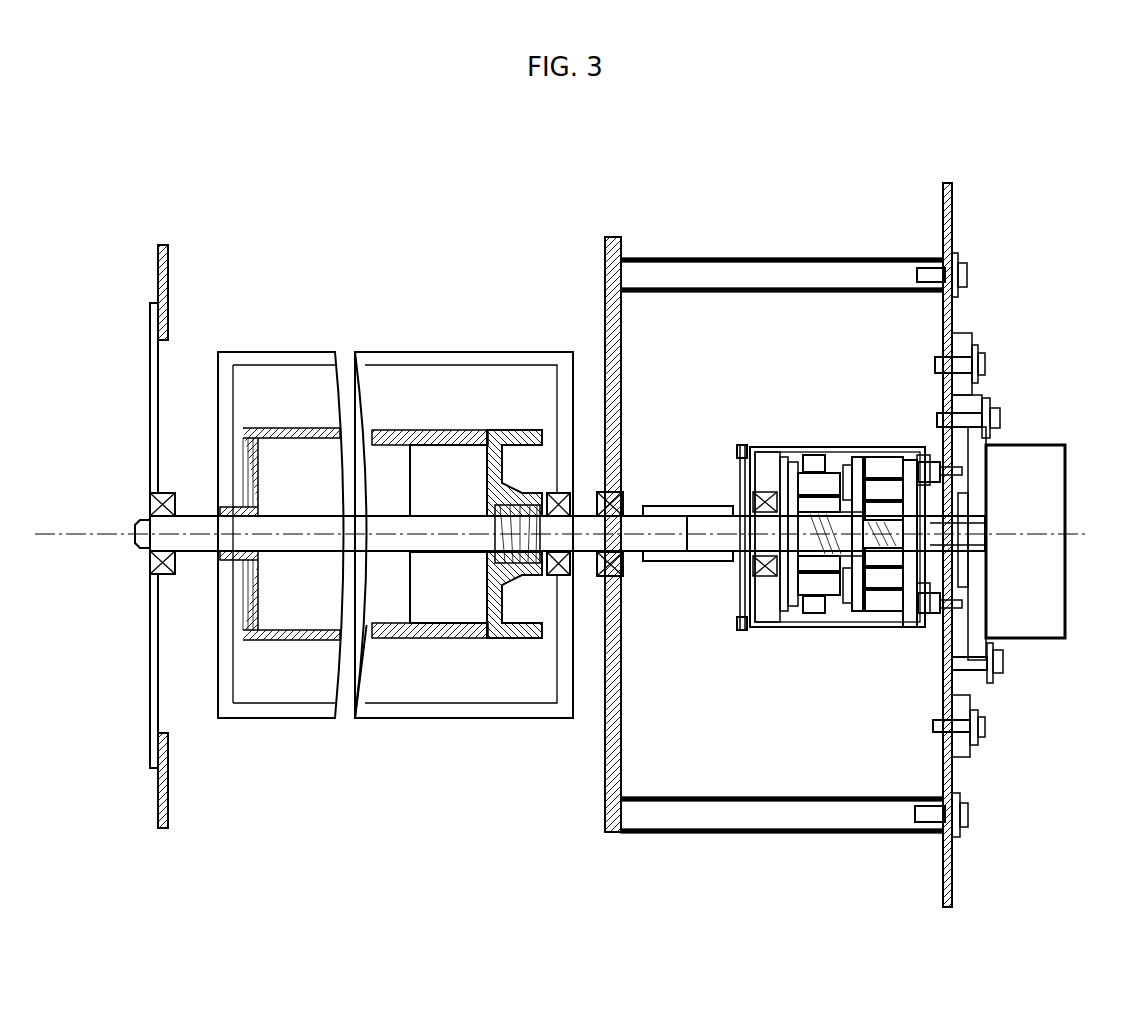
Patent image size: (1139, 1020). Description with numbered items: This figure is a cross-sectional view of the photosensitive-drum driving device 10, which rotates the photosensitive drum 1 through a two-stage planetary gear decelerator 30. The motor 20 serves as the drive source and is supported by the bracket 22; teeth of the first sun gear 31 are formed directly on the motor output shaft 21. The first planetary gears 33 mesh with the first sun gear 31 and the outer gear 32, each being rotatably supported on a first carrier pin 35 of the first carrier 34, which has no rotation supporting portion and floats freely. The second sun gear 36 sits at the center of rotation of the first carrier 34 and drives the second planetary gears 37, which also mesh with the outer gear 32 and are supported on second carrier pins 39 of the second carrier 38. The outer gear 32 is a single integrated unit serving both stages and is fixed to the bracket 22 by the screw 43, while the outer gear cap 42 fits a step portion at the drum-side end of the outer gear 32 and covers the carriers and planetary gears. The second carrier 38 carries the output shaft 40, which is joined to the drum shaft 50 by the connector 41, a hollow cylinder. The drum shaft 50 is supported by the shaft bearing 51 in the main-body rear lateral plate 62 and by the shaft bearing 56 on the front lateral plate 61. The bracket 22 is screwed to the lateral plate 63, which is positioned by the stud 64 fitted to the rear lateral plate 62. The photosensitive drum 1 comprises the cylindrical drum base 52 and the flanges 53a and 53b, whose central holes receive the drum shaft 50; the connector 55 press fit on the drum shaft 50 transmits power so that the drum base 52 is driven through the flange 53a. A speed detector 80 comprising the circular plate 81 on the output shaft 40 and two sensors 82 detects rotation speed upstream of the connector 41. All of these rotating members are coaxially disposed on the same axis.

The photosensitive drum 1 is at (380, 650).
The photosensitive-drum driving device 10 is at (560, 185).
The motor 20 is at (1065, 470).
The output shaft 21 is at (985, 540).
The bracket 22 is at (972, 342).
The planetary gear decelerator 30 is at (876, 678).
The first sun gear 31 is at (880, 568).
The outer gear 32 is at (878, 457).
The first planetary gears 33 is at (895, 480).
The first carrier 34 is at (825, 612).
The first carrier pin 35 is at (885, 590).
The second sun gear 36 is at (820, 473).
The second planetary gears 37 is at (805, 455).
The second carrier 38 is at (790, 615).
The second carrier pin 39 is at (848, 465).
The output shaft 40 is at (705, 563).
The connector 41 is at (680, 505).
The outer gear cap 42 is at (767, 633).
The screw 43 is at (962, 604).
The drum shaft 50 is at (632, 512).
The shaft bearing 51 is at (605, 578).
The cylindrical drum base 52 is at (450, 430).
The flange 53a is at (527, 430).
The flange 53b is at (250, 428).
The connector 55 is at (512, 566).
The shaft bearing 56 is at (150, 562).
The front lateral plate 61 is at (150, 330).
The main-body rear lateral plate 62 is at (605, 252).
The lateral plate 63 is at (952, 203).
The stud 64 is at (740, 258).
The speed detector 80 is at (706, 588).
The circular plate 81 is at (740, 597).
The sensors 82 is at (738, 447).